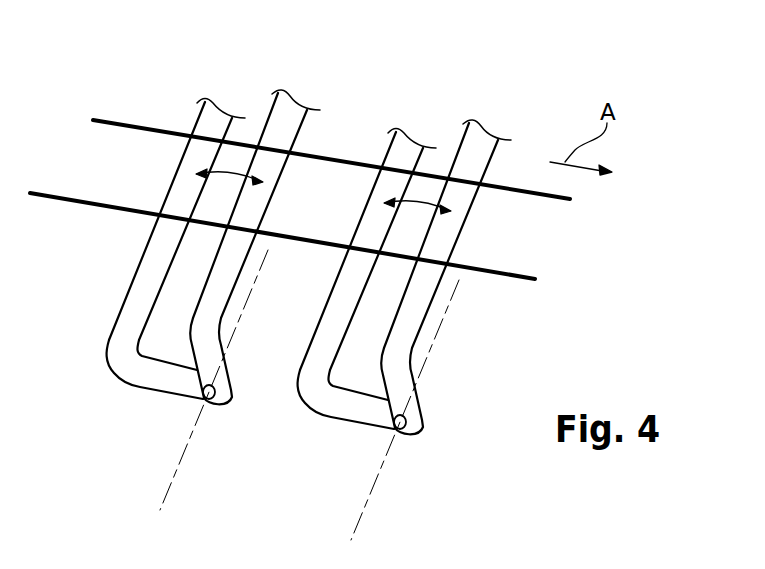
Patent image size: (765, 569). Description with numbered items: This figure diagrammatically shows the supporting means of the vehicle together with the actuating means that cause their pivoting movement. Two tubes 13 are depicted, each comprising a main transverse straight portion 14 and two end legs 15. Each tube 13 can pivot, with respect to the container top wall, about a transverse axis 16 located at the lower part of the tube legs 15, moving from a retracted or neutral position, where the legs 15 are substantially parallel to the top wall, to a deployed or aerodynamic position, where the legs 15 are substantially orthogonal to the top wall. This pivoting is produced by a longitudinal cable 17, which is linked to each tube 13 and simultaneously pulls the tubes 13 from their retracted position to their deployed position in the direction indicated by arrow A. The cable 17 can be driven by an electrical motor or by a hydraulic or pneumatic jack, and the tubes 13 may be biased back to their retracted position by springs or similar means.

The tube 13 is at (315, 127).
The main transverse straight portion 14 is at (283, 132).
The end legs 15 is at (175, 379).
The transverse axis 16 is at (173, 480).
The longitudinal cable 17 is at (138, 128).